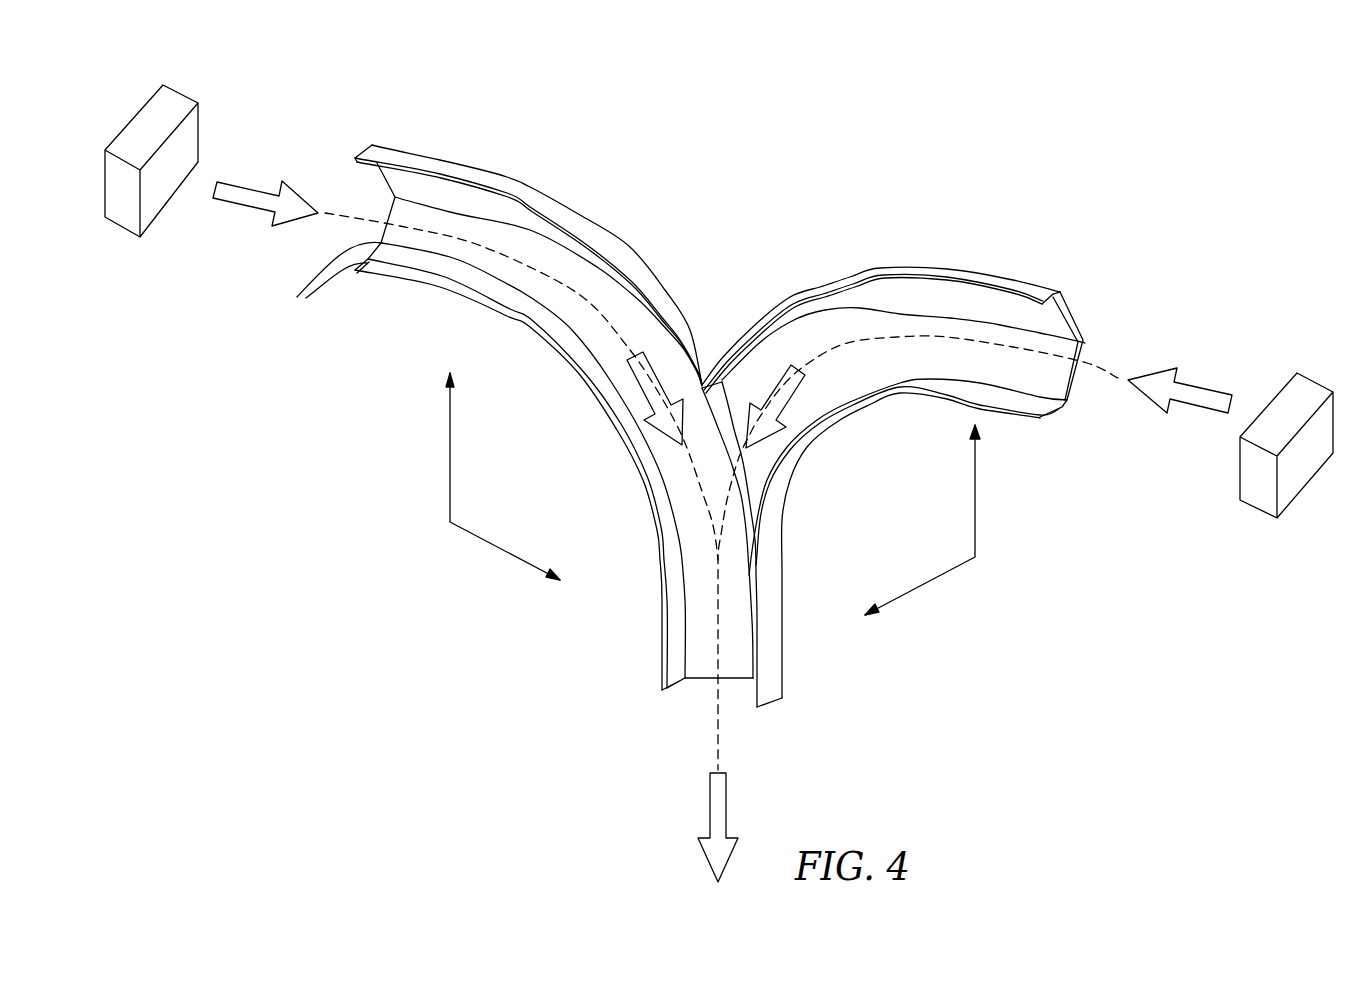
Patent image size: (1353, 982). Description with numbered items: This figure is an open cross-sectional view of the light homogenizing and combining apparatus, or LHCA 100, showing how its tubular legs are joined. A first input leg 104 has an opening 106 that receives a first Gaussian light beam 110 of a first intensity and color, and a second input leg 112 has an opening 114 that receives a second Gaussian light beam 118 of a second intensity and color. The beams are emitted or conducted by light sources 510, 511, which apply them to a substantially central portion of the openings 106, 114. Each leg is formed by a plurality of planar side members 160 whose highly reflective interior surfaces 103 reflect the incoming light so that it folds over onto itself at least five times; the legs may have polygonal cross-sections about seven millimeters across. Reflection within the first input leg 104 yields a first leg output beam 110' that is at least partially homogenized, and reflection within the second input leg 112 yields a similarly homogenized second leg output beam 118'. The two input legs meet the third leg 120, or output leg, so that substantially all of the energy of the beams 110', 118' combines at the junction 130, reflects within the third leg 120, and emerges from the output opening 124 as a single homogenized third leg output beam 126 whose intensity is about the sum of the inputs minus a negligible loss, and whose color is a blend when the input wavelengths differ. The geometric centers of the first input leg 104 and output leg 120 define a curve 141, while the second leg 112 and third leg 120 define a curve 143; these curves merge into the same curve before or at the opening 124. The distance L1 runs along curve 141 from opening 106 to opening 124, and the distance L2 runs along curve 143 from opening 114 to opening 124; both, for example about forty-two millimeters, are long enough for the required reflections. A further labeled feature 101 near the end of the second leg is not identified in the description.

The light homogenizing and combining apparatus (LHCA) 100 is at (870, 160).
The end plate 101 is at (1062, 407).
The highly reflective interior surfaces 103 is at (503, 267).
The first input leg 104 is at (430, 163).
The opening 106 is at (357, 157).
The first Gaussian light beam 110 is at (265, 180).
The first leg output beam 110' is at (619, 398).
The second input leg 112 is at (978, 277).
The opening 114 is at (1063, 293).
The second Gaussian light beam 118 is at (1180, 373).
The second leg output beam 118' is at (810, 417).
The third leg (output leg) 120 is at (783, 673).
The output opening 124 is at (662, 692).
The third leg output beam 126 is at (710, 808).
The junction 130 is at (702, 384).
The curve 141 is at (353, 213).
The curve 143 is at (1105, 371).
The side members 160 is at (322, 277).
The light source 510 is at (140, 122).
The light source 511 is at (1305, 390).
The distance along curve 141 L1 is at (493, 476).
The distance along curve 143 L2 is at (936, 520).